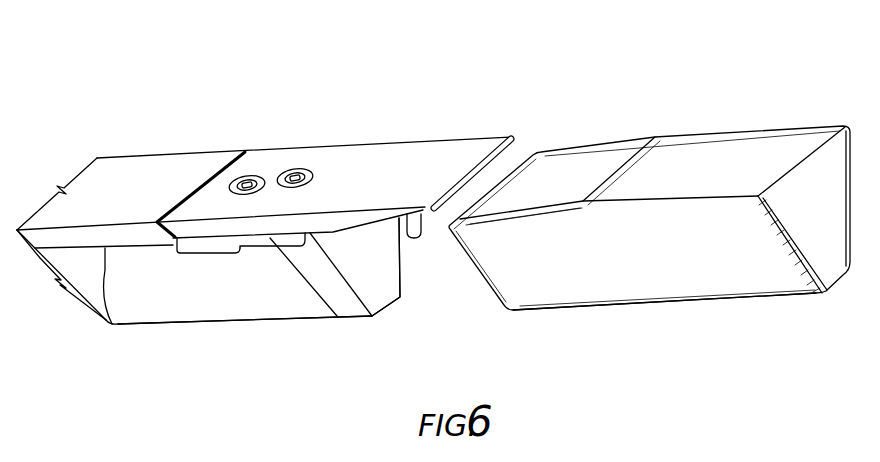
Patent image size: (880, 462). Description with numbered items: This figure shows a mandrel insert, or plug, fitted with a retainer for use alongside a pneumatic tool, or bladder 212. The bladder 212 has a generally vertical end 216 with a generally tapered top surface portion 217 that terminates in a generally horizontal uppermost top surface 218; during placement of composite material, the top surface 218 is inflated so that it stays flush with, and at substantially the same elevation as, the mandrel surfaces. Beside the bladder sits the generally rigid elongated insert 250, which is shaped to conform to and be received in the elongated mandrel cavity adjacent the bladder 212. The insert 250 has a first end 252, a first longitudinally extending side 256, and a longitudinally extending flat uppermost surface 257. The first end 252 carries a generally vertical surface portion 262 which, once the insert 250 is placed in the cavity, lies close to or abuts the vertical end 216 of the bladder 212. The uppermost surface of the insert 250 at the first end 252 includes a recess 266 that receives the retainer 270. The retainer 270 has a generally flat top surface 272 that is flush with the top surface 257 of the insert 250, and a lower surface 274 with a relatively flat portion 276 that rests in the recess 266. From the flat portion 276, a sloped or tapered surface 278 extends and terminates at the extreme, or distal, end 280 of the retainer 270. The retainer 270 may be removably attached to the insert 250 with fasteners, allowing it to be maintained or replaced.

The bladder 212 is at (690, 90).
The generally vertical end 216 is at (490, 283).
The generally tapered top surface portion 217 is at (582, 157).
The generally horizontal uppermost top surface 218 is at (741, 160).
The insert 250 is at (216, 112).
The first end 252 is at (339, 344).
The first longitudinally extending side 256 is at (230, 312).
The flat uppermost surface 257 is at (92, 170).
The generally vertical surface portion 262 is at (376, 277).
The recess 266 is at (81, 304).
The retainer 270 is at (449, 120).
The top surface 272 is at (330, 157).
The lower surface 274 is at (192, 240).
The flat portion 276 is at (240, 248).
The sloped surface 278 is at (421, 214).
The distal end 280 is at (516, 137).